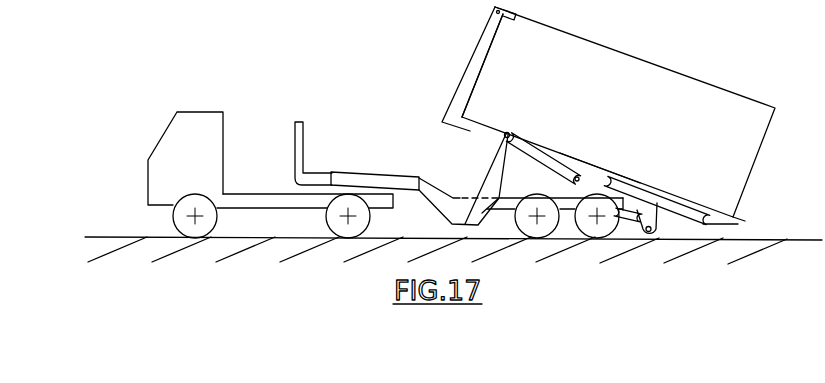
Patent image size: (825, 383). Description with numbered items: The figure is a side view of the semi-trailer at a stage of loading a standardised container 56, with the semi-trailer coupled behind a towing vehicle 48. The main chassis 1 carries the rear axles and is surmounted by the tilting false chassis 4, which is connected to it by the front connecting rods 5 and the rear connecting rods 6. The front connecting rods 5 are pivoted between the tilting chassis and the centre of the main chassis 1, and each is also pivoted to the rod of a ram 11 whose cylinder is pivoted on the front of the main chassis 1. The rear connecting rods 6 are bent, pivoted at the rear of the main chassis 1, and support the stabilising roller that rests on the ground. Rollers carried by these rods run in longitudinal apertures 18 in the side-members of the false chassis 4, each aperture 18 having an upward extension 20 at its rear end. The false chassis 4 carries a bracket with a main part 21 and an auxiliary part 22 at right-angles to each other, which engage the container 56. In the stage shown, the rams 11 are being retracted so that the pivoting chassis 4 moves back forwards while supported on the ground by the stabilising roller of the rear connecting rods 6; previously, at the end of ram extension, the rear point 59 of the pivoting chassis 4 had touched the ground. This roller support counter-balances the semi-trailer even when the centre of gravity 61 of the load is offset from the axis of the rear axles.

The main chassis 1 is at (428, 204).
The tilting false chassis 4 is at (717, 226).
The front connecting rods 5 is at (495, 177).
The rear connecting rods 6 is at (633, 215).
The ram 11 is at (363, 176).
The apertures 18 is at (651, 226).
The extension 20 is at (717, 220).
The main part 21 is at (474, 124).
The auxiliary part 22 is at (472, 75).
The towing vehicle 48 is at (207, 162).
The standardised container 56 is at (612, 47).
The rear point 59 is at (745, 221).
The centre of gravity 61 is at (611, 113).